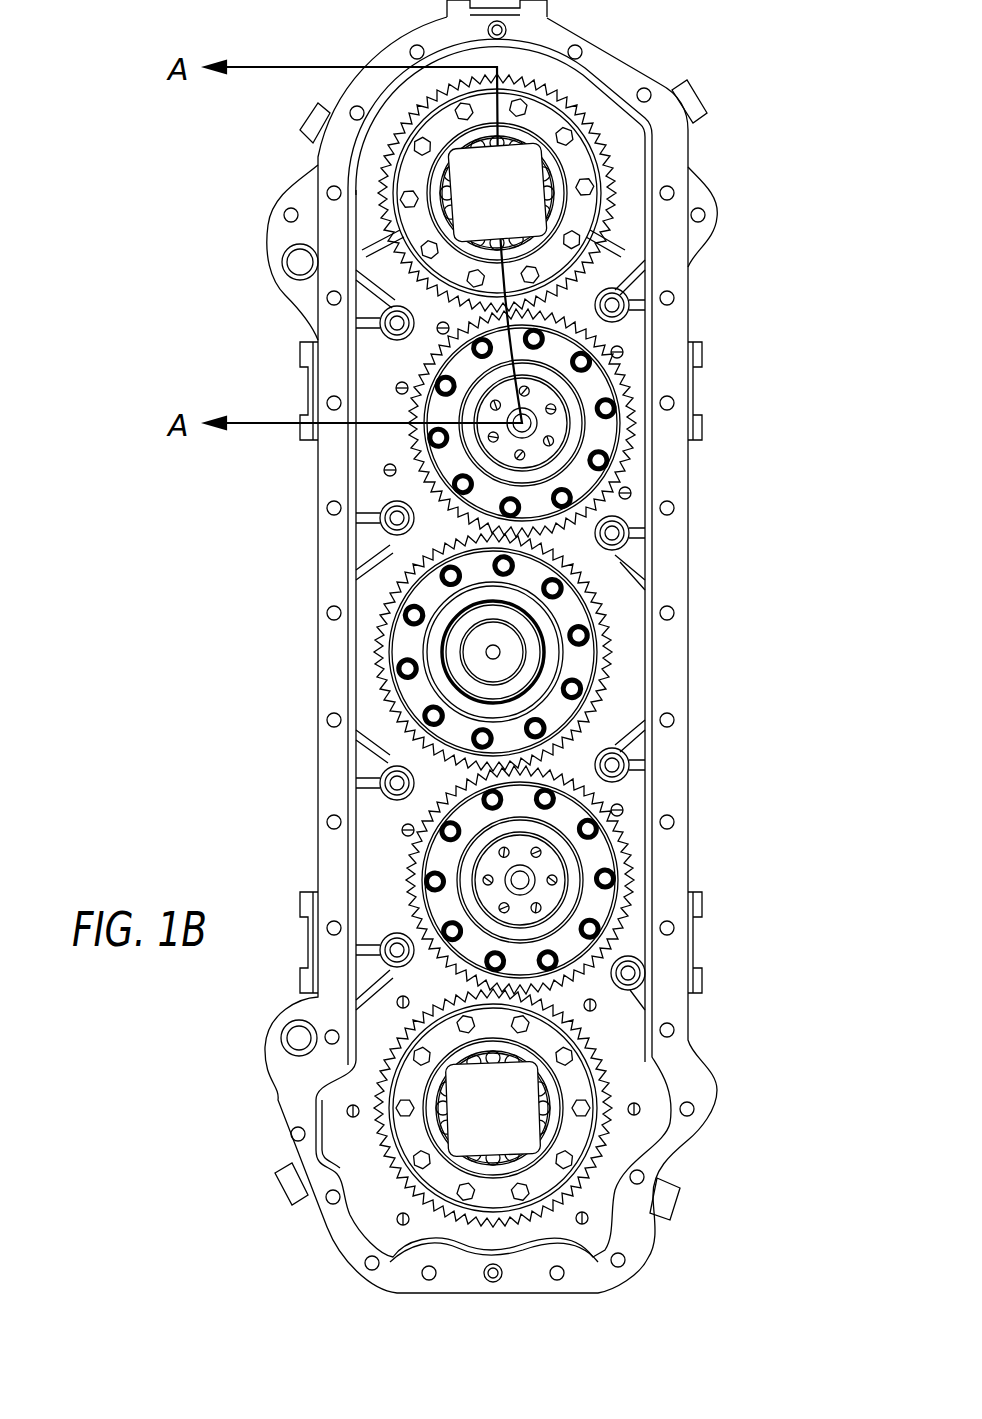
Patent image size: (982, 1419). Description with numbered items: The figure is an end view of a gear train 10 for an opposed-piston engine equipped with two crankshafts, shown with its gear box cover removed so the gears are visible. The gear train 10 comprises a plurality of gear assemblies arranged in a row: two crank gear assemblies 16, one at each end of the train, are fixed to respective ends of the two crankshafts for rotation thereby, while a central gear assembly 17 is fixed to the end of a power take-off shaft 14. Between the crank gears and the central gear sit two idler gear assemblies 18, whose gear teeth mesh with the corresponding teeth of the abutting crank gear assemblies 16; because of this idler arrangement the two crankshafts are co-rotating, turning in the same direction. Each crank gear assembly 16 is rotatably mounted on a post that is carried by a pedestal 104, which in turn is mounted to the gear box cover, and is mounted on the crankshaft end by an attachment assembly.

The gear train 10 is at (265, 663).
The power take-off shaft 14 is at (510, 657).
The gear assembly 16 is at (603, 163).
The gear assembly 17 is at (597, 600).
The idler gear assembly 18 is at (607, 386).
The pedestal 104 is at (522, 198).